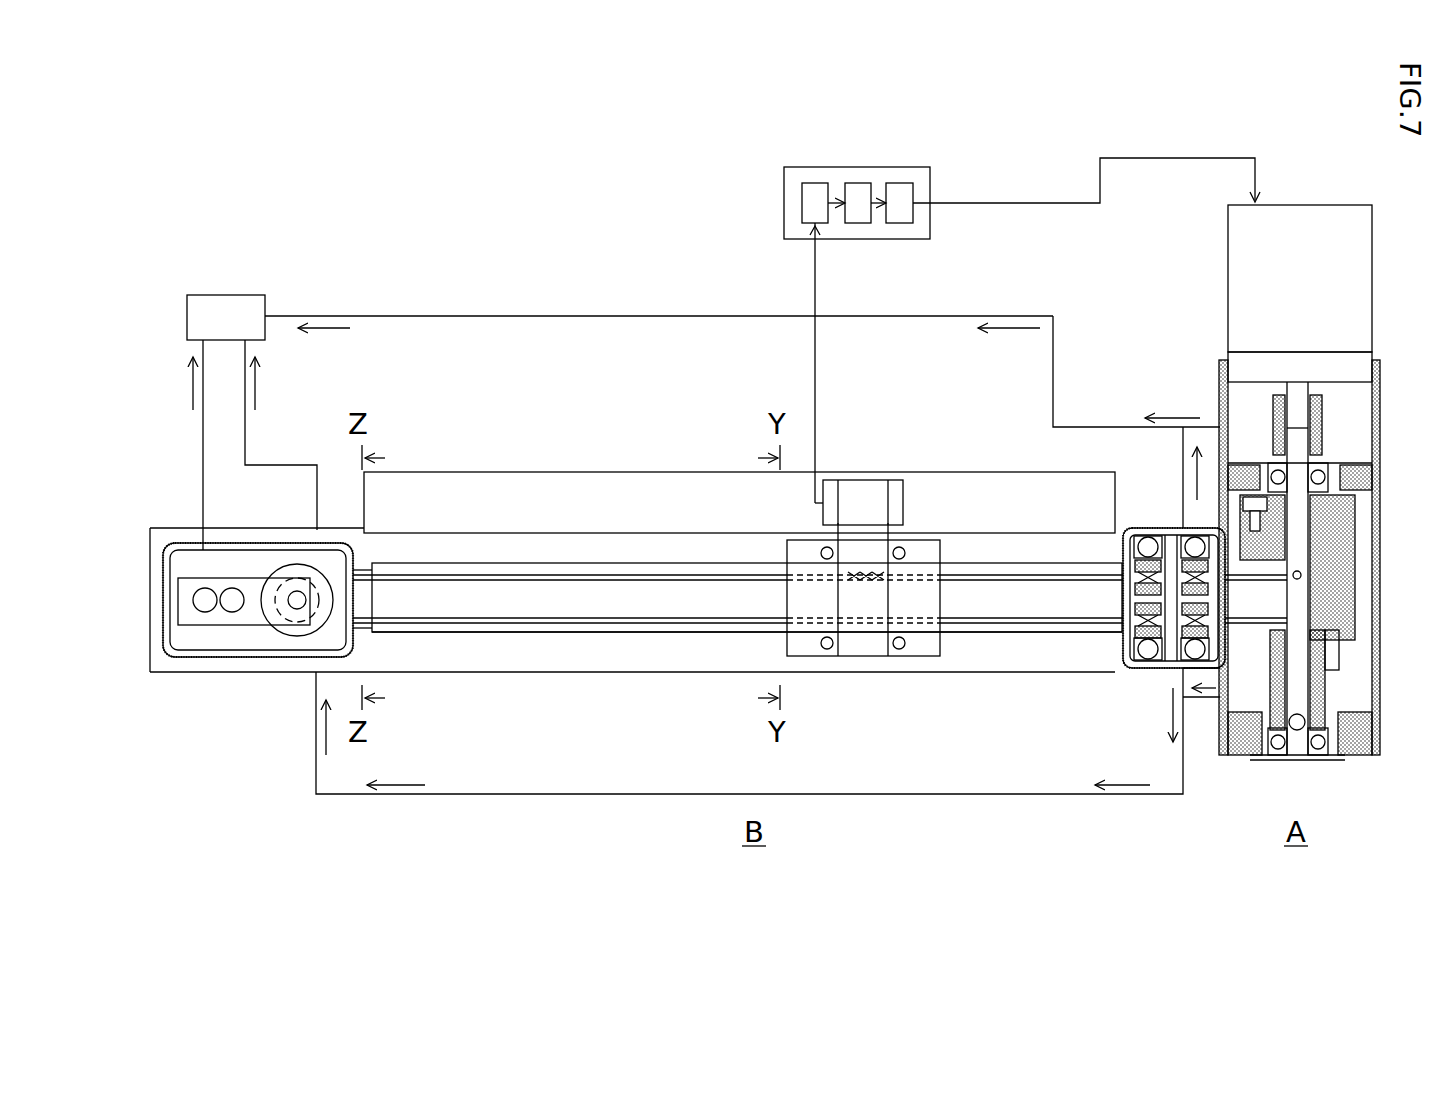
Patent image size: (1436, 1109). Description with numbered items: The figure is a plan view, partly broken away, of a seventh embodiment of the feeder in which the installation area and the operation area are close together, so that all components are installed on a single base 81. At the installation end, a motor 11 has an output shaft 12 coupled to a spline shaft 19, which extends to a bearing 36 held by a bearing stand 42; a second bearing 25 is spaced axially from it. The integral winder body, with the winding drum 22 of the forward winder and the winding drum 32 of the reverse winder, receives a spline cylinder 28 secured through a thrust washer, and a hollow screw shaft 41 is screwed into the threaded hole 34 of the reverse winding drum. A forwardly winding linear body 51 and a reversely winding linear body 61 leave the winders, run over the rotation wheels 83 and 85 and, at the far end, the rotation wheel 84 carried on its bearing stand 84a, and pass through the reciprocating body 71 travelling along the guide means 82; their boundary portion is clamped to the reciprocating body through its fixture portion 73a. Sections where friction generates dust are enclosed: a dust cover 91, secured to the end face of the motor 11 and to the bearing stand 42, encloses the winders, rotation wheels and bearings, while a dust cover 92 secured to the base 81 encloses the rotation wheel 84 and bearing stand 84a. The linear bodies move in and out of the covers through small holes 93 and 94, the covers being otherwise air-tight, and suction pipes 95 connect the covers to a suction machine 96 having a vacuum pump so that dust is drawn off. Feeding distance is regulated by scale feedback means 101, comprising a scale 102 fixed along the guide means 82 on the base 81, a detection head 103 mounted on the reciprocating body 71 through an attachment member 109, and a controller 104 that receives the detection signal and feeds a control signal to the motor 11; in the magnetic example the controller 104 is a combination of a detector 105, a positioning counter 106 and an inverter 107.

The motor 11 is at (1245, 296).
The output shaft 12 is at (1298, 410).
The spline shaft 19 is at (1300, 560).
The winding drum 22 is at (1340, 530).
The bearing 25 is at (1330, 480).
The spline cylinder 28 is at (1340, 505).
The winding drum 32 is at (1330, 625).
The threaded hole 34 is at (1322, 655).
The bearing 36 is at (1276, 748).
The screw shaft 41 is at (1275, 662).
The bearing stand 42 is at (1350, 745).
The forwardly winding linear body 51 is at (1000, 575).
The reversely winding linear body 61 is at (486, 572).
The reciprocating body 71 is at (874, 658).
The fixture portion 73a is at (862, 575).
The base 81 is at (545, 660).
The guide means 82 is at (650, 628).
The rotation wheel 83 is at (1112, 530).
The rotation wheel 84 is at (297, 634).
The bearing stand 84a is at (250, 620).
The rotation wheel 85 is at (1125, 655).
The dust cover 91 is at (1374, 470).
The dust cover 92 is at (178, 545).
The small hole 93 is at (1113, 575).
The small hole 94 is at (362, 572).
The suction pipe 95 is at (203, 462).
The suction machine 96 is at (255, 305).
The scale feedback means 101 is at (648, 360).
The scale 102 is at (612, 480).
The detection head 103 is at (822, 520).
The controller 104 is at (782, 190).
The detector 105 is at (808, 204).
The positioning counter 106 is at (860, 223).
The inverter 107 is at (898, 210).
The attachment member 109 is at (858, 505).